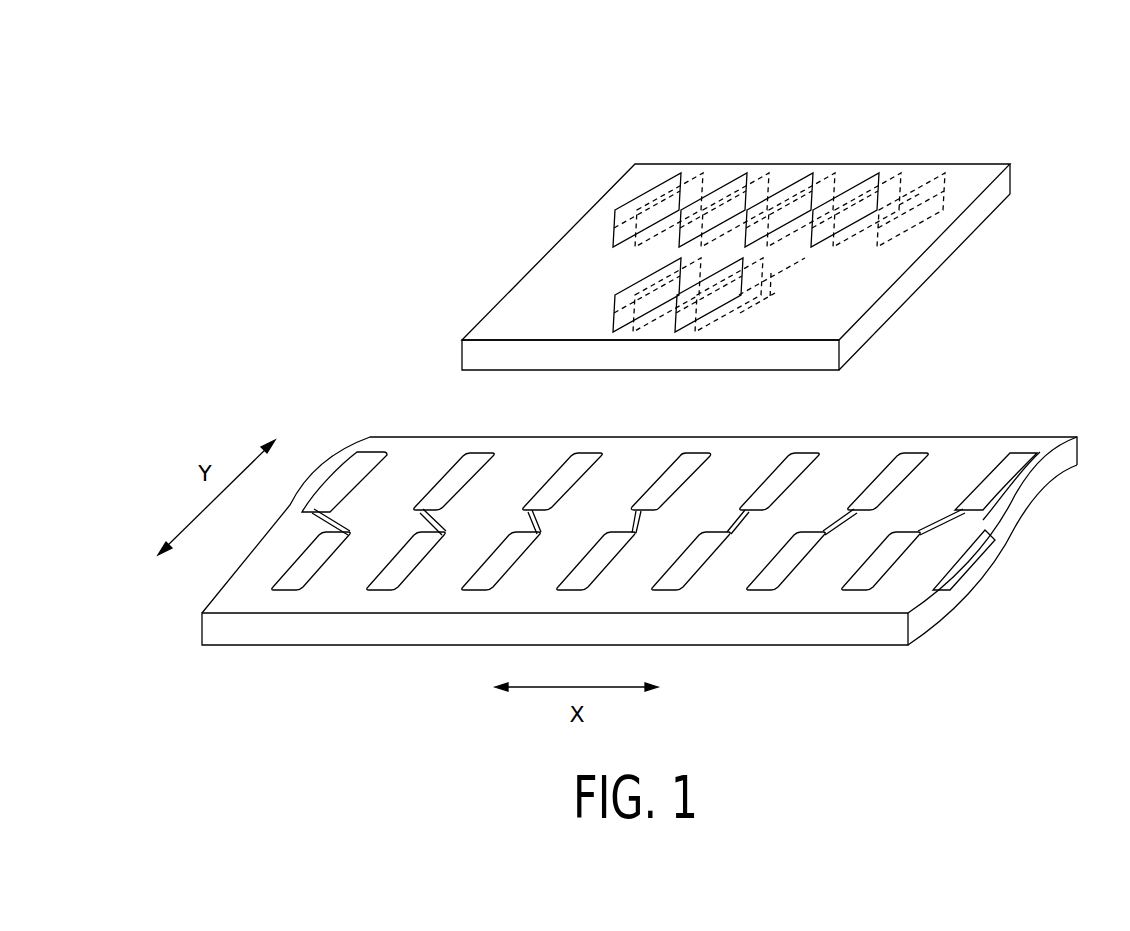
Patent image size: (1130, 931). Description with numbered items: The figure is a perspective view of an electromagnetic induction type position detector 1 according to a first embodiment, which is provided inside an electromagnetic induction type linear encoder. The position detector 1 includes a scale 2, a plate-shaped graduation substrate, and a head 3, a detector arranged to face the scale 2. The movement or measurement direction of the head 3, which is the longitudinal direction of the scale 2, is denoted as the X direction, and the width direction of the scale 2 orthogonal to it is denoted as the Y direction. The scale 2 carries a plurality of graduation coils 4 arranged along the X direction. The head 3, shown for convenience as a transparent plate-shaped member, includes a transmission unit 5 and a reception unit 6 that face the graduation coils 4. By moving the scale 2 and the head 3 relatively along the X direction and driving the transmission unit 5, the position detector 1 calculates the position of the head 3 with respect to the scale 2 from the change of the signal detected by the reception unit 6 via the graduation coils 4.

The electromagnetic induction type position detector 1 is at (1052, 132).
The scale 2 is at (985, 430).
The head 3 is at (898, 155).
The graduation coils 4 is at (827, 452).
The transmission unit 5 is at (906, 227).
The reception unit 6 is at (780, 273).